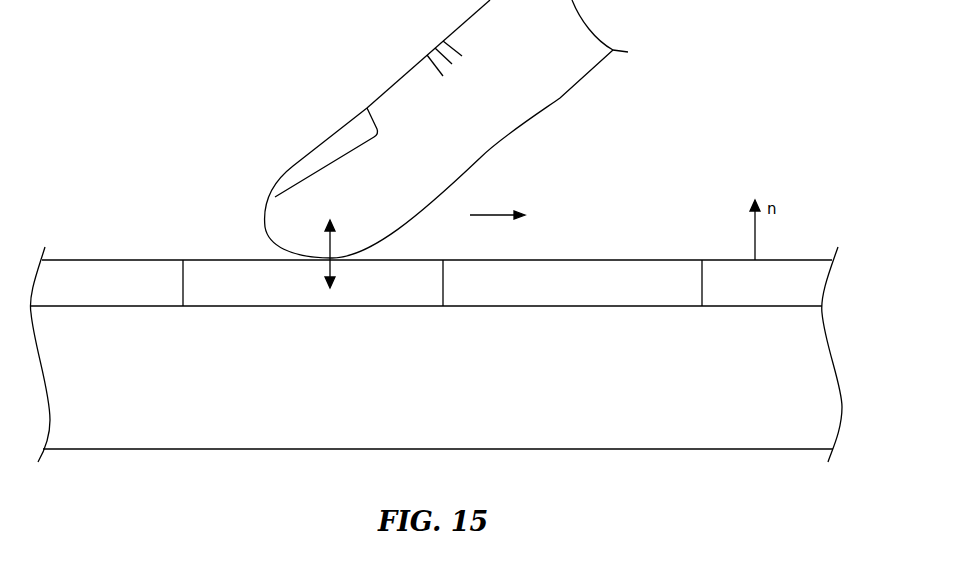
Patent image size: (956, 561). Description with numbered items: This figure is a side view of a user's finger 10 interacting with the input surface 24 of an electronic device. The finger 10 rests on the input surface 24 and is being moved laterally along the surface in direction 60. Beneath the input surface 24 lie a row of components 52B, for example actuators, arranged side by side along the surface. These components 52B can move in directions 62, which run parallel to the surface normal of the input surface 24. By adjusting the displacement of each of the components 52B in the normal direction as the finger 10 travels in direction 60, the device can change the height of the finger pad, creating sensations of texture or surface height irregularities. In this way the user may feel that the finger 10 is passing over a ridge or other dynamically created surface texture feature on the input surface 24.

The finger 10 is at (399, 97).
The input surface 24 is at (807, 260).
The components 52B is at (107, 293).
The direction 60 is at (497, 212).
The directions 62 is at (333, 267).